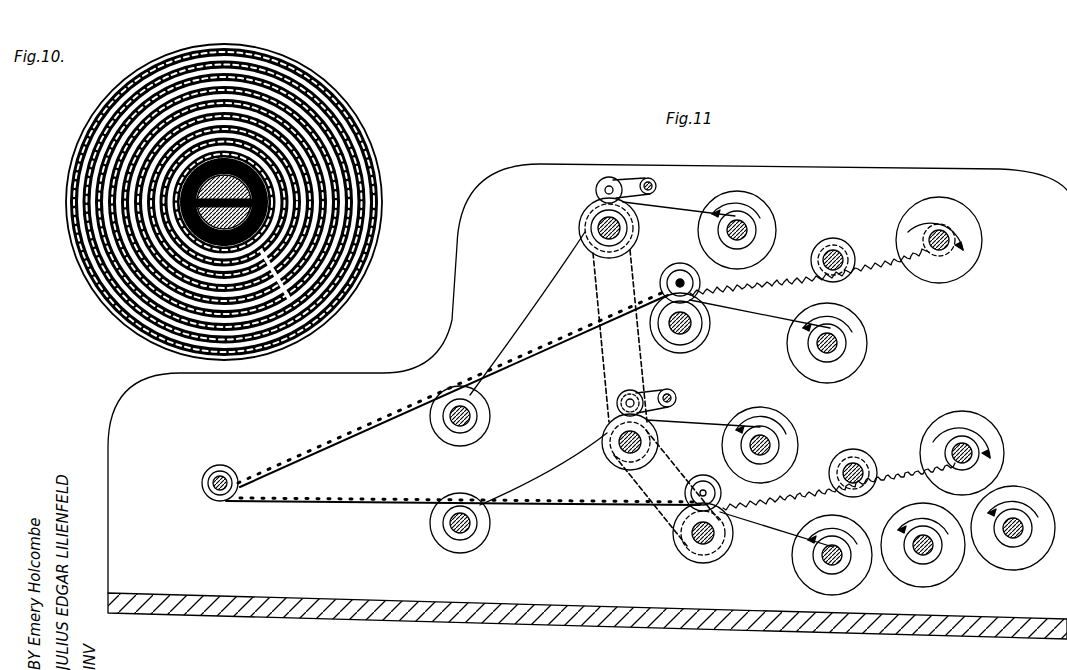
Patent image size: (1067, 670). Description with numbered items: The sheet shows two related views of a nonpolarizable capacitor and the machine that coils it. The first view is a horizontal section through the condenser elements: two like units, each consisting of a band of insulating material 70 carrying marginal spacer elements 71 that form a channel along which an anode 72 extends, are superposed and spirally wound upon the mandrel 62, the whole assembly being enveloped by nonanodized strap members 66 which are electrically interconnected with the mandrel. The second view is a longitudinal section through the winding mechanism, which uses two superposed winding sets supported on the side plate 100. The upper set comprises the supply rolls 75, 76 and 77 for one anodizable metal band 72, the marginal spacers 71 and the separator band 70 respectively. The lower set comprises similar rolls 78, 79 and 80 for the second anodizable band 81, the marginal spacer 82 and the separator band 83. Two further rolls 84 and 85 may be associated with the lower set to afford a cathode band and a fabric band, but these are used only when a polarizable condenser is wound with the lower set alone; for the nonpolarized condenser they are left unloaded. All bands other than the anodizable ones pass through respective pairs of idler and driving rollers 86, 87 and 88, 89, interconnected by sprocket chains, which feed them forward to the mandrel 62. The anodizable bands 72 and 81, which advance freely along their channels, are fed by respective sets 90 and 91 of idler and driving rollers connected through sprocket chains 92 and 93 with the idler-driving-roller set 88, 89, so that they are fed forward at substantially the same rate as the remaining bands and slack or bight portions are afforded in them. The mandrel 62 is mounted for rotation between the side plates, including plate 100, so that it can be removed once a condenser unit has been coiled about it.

In FIG. 10, the mandrel 62 is at (178, 236).
In FIG. 11, the mandrel 62 is at (214, 488).
In FIG. 10, the nonanodized strap members 66 is at (378, 228).
In FIG. 10, the band of insulating material 70 is at (104, 138).
In FIG. 11, the band of insulating material 70 is at (776, 307).
In FIG. 10, the marginal spacer elements 71 is at (266, 258).
In FIG. 11, the marginal spacer elements 71 is at (867, 262).
In FIG. 10, the anode 72 is at (335, 128).
In FIG. 11, the anode 72 is at (676, 208).
In FIG. 11, the supply roll 75 is at (771, 223).
In FIG. 11, the supply roll 76 is at (964, 215).
In FIG. 11, the supply roll 77 is at (866, 343).
In FIG. 11, the roll 78 is at (788, 431).
In FIG. 11, the roll 79 is at (992, 455).
In FIG. 11, the roll 80 is at (807, 577).
In FIG. 11, the second anodizable band 81 is at (694, 428).
In FIG. 11, the marginal spacer 82 is at (802, 491).
In FIG. 11, the separator band 83 is at (775, 531).
In FIG. 11, the roll 84 is at (920, 576).
In FIG. 11, the roll 85 is at (1008, 562).
In FIG. 11, the idler roller 86 is at (692, 283).
In FIG. 11, the driving roller 87 is at (708, 325).
In FIG. 11, the idler roller 88 is at (693, 482).
In FIG. 11, the driving roller 89 is at (702, 560).
In FIG. 11, the set of idler and driving rollers 90 is at (594, 195).
In FIG. 11, the set of idler and driving rollers 91 is at (615, 403).
In FIG. 11, the sprocket chain 92 is at (597, 302).
In FIG. 11, the sprocket chain 93 is at (632, 476).
In FIG. 11, the side plate 100 is at (530, 178).